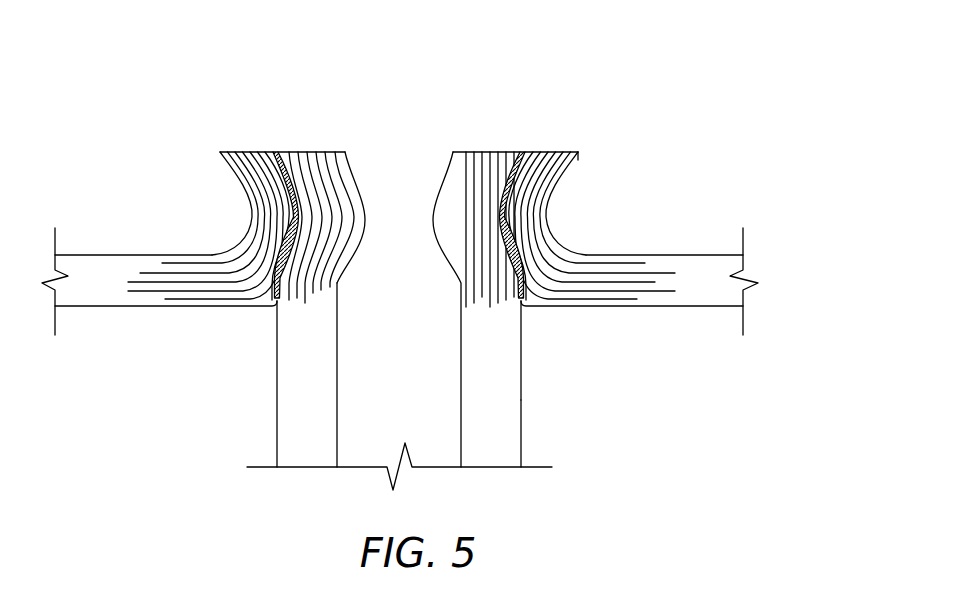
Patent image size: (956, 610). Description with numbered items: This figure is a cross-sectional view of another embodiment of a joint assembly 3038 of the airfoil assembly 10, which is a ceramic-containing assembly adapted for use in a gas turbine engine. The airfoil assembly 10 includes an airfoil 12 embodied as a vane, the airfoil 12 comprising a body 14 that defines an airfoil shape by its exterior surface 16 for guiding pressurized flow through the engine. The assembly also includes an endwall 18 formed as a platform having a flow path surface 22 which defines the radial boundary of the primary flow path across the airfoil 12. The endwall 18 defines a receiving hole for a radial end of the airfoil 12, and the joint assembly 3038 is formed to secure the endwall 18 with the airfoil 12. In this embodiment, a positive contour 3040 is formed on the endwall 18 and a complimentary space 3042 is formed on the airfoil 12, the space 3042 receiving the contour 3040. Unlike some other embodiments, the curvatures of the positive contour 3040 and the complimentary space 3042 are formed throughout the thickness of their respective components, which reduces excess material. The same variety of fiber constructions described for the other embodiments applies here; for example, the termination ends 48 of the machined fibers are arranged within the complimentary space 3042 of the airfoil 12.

The airfoil assembly 10 is at (683, 90).
The airfoil 12 is at (512, 440).
The body 14 is at (305, 450).
The exterior surface 16 is at (523, 398).
The endwall 18 is at (97, 278).
The flow path surface 22 is at (93, 307).
The termination ends 48 is at (506, 205).
The joint assembly 3038 is at (263, 137).
The positive contour 3040 is at (282, 200).
The complimentary space 3042 is at (500, 227).